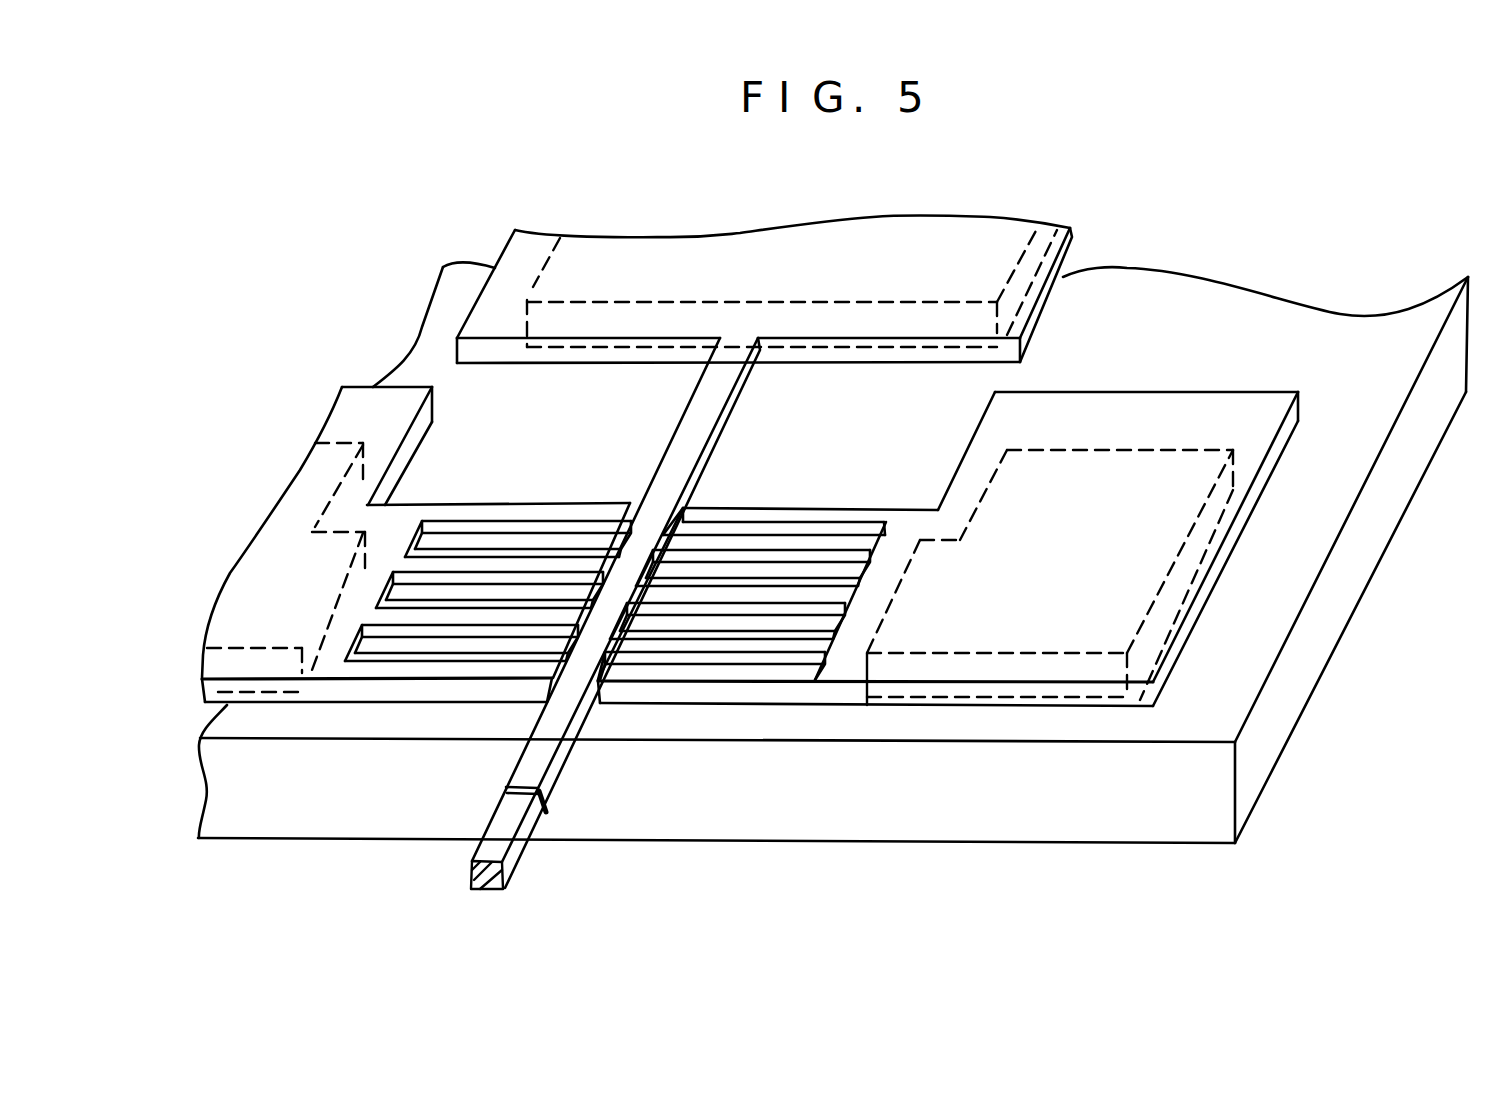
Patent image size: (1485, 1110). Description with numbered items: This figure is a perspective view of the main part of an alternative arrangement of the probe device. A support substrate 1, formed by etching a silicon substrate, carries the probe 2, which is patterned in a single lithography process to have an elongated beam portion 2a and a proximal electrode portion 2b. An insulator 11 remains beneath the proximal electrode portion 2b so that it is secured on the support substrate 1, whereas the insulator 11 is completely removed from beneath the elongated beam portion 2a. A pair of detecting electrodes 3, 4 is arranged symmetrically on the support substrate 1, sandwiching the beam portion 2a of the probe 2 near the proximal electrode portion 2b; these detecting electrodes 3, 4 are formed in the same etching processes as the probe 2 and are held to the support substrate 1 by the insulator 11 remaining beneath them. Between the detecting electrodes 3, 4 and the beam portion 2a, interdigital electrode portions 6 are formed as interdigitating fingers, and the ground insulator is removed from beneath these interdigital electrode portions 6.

The support substrate 1 is at (1255, 305).
The probe 2 is at (529, 843).
The elongated beam portion 2a is at (523, 763).
The proximal electrode portion 2b is at (952, 240).
The detecting electrode 3 is at (360, 403).
The detecting electrode 4 is at (1158, 408).
The interdigital electrode portion 6 is at (547, 533).
The insulator 11 is at (527, 300).